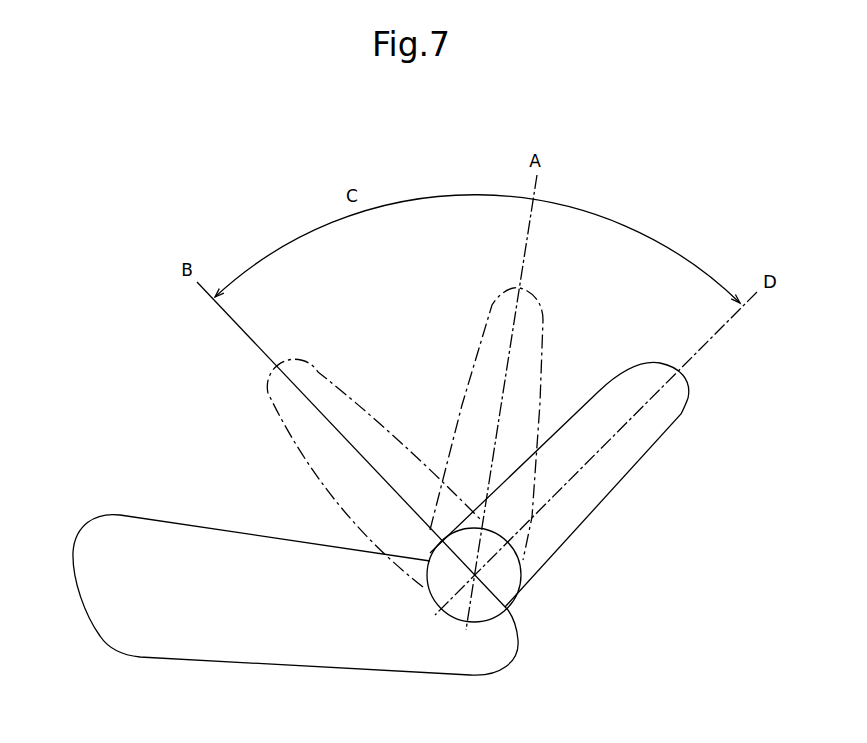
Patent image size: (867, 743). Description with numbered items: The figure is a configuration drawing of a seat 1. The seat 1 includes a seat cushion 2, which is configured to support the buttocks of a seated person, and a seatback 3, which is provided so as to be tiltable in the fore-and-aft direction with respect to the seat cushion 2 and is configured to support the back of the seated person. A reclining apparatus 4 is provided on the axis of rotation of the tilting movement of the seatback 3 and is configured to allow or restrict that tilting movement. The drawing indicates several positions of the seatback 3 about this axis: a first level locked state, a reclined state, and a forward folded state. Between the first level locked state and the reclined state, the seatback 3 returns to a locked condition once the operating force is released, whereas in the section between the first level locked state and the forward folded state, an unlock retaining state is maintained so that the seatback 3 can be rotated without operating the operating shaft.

The seat 1 is at (696, 395).
The seat cushion 2 is at (238, 638).
The seatback 3 is at (600, 486).
The reclining apparatus 4 is at (507, 578).